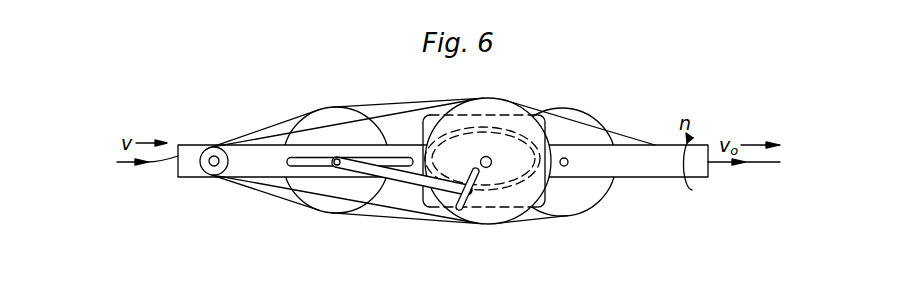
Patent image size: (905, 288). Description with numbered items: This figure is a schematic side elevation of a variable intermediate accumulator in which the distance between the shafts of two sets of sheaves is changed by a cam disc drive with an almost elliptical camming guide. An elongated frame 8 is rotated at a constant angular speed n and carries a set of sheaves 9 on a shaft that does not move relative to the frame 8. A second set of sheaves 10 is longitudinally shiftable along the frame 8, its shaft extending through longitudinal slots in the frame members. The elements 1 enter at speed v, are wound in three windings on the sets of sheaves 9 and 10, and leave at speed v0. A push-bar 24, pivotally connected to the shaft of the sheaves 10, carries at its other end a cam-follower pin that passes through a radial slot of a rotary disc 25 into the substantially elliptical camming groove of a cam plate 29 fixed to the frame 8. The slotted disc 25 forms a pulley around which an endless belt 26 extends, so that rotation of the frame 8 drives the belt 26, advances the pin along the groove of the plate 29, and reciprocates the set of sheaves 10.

The elements 1 is at (172, 158).
The elongated frame 8 is at (636, 148).
The set of sheaves 9 is at (569, 204).
The second set of sheaves 10 is at (305, 205).
The push-bars 24 is at (393, 205).
The rotary discs 25 is at (492, 214).
The endless belts 26 is at (243, 186).
The cam plates 29 is at (546, 212).